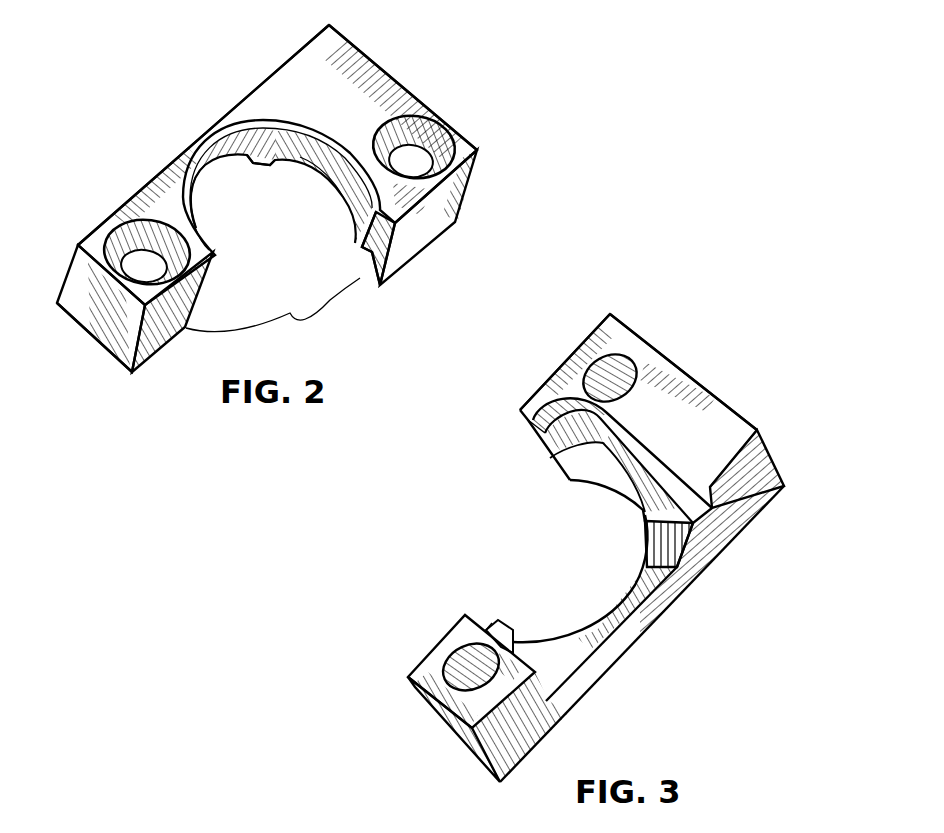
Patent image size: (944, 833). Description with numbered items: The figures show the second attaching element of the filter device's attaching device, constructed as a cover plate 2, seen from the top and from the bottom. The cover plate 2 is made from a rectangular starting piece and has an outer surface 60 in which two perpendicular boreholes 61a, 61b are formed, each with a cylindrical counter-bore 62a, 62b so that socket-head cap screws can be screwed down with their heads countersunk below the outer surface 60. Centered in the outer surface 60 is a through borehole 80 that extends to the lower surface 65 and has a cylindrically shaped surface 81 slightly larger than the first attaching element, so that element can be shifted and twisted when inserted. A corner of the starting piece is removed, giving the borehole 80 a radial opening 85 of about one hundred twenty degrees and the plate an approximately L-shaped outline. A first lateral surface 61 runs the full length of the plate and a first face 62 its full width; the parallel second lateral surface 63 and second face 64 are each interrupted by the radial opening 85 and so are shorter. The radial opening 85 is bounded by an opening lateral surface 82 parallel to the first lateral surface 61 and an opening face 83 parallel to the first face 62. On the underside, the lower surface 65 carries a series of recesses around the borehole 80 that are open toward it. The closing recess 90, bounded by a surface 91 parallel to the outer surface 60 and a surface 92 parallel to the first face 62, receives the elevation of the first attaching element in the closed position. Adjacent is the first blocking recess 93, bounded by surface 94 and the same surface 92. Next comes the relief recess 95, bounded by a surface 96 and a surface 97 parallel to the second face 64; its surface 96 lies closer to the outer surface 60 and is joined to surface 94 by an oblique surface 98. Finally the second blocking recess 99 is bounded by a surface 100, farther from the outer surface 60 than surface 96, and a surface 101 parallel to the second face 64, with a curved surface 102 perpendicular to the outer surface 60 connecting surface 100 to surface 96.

In FIG. 2, the cover plate 2 is at (152, 102).
In FIG. 2, the outer surface 60 is at (326, 109).
In FIG. 3, the outer surface 60 is at (690, 585).
In FIG. 2, the first lateral surface 61 is at (187, 150).
In FIG. 3, the first lateral surface 61 is at (723, 528).
In FIG. 2, the borehole 61a is at (117, 242).
In FIG. 3, the borehole 61a is at (447, 658).
In FIG. 2, the borehole 61b is at (420, 157).
In FIG. 3, the borehole 61b is at (590, 362).
In FIG. 2, the first face 62 is at (366, 57).
In FIG. 3, the first face 62 is at (673, 362).
In FIG. 2, the cylindrical counter-bore 62a is at (140, 220).
In FIG. 2, the cylindrical counter-bore 62b is at (425, 115).
In FIG. 2, the second lateral surface 63 is at (430, 222).
In FIG. 2, the second face 64 is at (87, 323).
In FIG. 3, the second face 64 is at (450, 740).
In FIG. 2, the lower surface 65 is at (130, 375).
In FIG. 3, the lower surface 65 is at (707, 417).
In FIG. 2, the through borehole 80 is at (271, 240).
In FIG. 3, the through borehole 80 is at (568, 560).
In FIG. 2, the cylindrically shaped surface 81 is at (320, 160).
In FIG. 2, the opening lateral surface 82 is at (180, 323).
In FIG. 2, the opening face 83 is at (363, 278).
In FIG. 2, the radial opening 85 is at (303, 320).
In FIG. 3, the closing recess 90 is at (545, 460).
In FIG. 2, the surface 91 is at (343, 215).
In FIG. 3, the surface 91 is at (600, 437).
In FIG. 3, the surface 92 is at (610, 450).
In FIG. 3, the first blocking recess 93 is at (637, 518).
In FIG. 2, the surface 94 is at (278, 168).
In FIG. 3, the surface 94 is at (677, 493).
In FIG. 2, the relief recess 95 is at (198, 195).
In FIG. 3, the relief recess 95 is at (604, 611).
In FIG. 3, the surface 96 is at (617, 640).
In FIG. 3, the surface 97 is at (573, 700).
In FIG. 2, the oblique surface 98 is at (252, 163).
In FIG. 3, the oblique surface 98 is at (657, 546).
In FIG. 3, the second blocking recess 99 is at (498, 614).
In FIG. 3, the surface 100 is at (488, 627).
In FIG. 3, the surface 101 is at (595, 688).
In FIG. 3, the curved surface 102 is at (513, 640).